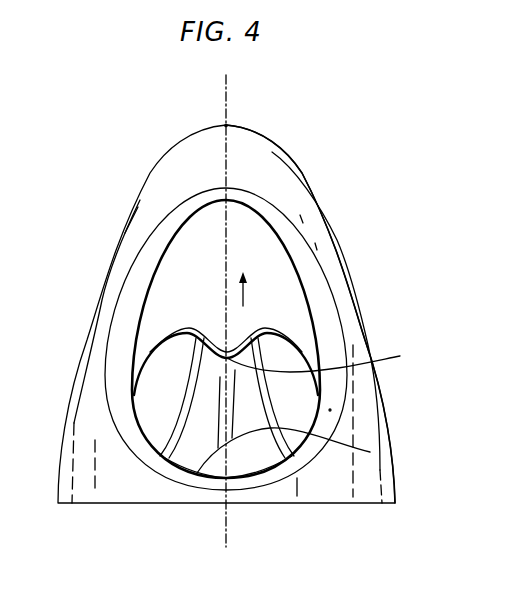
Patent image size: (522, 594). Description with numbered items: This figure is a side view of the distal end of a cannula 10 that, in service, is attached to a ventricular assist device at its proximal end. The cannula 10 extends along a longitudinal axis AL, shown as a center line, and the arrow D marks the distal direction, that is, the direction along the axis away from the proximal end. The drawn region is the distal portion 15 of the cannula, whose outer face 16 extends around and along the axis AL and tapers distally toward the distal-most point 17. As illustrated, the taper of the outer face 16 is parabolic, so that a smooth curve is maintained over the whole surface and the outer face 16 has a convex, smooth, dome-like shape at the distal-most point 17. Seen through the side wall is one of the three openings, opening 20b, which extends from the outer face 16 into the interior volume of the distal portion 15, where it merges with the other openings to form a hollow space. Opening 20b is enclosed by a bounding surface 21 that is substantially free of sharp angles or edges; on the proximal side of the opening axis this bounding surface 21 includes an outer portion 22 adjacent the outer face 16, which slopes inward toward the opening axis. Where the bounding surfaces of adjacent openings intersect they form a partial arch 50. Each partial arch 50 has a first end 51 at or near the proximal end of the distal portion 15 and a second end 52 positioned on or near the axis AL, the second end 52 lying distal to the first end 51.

The cannula 10 is at (90, 230).
The distal portion 15 is at (372, 396).
The outer face 16 is at (283, 182).
The distal-most point 17 is at (228, 126).
The opening 20b is at (282, 248).
The bounding surface 21 is at (332, 284).
The outer portion 22 is at (330, 410).
The partial arch 50 is at (163, 330).
The first end 51 is at (370, 452).
The second end 52 is at (400, 356).
The longitudinal axis AL is at (227, 90).
The distal direction D is at (258, 290).